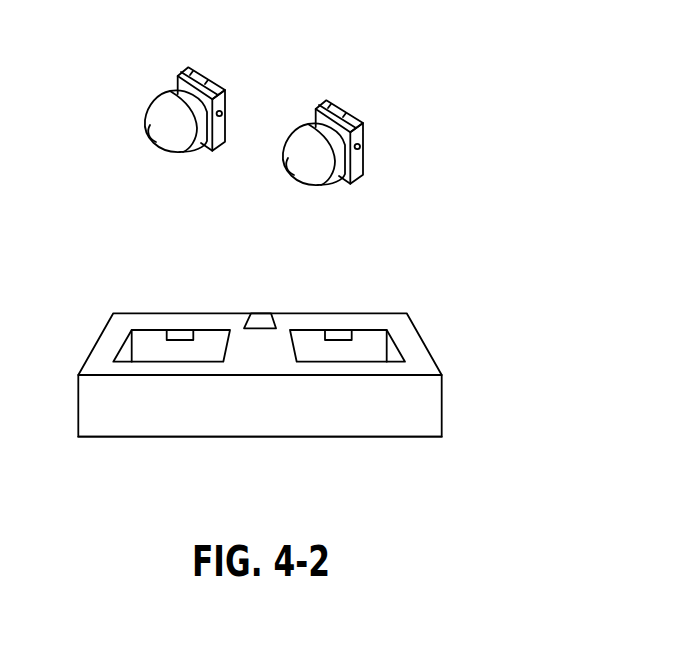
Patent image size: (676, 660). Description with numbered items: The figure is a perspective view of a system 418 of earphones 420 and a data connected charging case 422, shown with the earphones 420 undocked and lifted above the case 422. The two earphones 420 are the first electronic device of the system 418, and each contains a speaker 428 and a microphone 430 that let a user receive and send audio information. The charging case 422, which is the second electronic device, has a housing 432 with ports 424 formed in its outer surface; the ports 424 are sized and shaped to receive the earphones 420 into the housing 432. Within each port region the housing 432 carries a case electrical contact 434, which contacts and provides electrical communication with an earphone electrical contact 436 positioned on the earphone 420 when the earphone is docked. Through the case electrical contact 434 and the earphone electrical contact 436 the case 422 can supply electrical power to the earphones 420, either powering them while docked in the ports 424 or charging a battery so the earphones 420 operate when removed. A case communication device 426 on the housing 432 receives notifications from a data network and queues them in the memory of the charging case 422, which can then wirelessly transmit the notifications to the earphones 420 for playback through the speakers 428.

The system 418 is at (364, 129).
The earphones 420 is at (265, 68).
The charging case 422 is at (309, 379).
The ports 424 is at (375, 328).
The case communication device 426 is at (258, 313).
The speaker 428 is at (294, 163).
The microphone 430 is at (380, 175).
The housing 432 is at (373, 422).
The case electrical contact 434 is at (337, 329).
The earphone electrical contact 436 is at (342, 126).